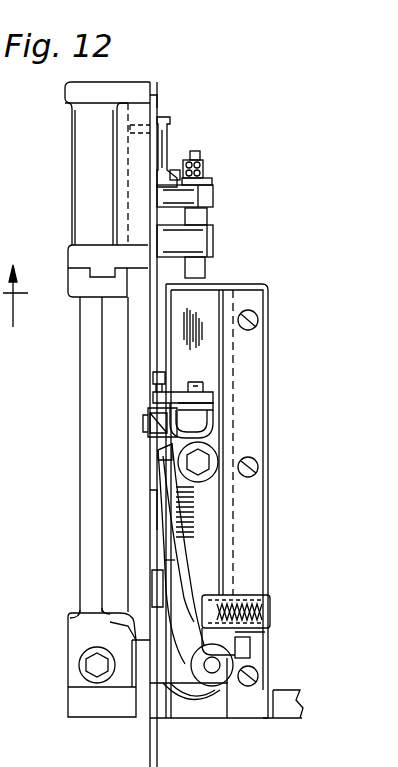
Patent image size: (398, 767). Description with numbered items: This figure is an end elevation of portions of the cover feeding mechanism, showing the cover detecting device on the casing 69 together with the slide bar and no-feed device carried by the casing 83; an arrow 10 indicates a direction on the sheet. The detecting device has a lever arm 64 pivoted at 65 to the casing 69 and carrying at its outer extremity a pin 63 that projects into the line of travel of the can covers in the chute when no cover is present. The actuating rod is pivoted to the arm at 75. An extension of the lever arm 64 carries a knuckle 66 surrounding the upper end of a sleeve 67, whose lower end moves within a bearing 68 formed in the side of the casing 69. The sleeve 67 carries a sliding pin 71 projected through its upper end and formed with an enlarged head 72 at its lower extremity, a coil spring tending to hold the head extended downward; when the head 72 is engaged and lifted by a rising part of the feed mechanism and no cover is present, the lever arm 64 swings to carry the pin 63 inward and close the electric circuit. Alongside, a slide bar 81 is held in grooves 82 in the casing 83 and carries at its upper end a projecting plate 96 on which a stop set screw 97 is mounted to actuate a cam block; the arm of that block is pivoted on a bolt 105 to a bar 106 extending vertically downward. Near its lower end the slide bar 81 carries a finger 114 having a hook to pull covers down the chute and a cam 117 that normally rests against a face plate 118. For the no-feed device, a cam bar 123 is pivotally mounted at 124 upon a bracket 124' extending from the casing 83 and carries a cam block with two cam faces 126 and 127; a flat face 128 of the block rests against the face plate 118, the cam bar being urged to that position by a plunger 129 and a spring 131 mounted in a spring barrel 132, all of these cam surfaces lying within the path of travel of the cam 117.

The direction arrow 10 is at (27, 296).
The pin 63 is at (158, 106).
The lever arm 64 is at (166, 150).
The pivot 65 is at (213, 181).
The knuckle 66 is at (214, 195).
The sleeve 67 is at (208, 217).
The bearing 68 is at (214, 242).
The casing 69 is at (100, 143).
The sliding pin 71 is at (201, 155).
The enlarged head 72 is at (206, 268).
The pivot 75 is at (180, 172).
The slide bar 81 is at (200, 530).
The grooves 82 is at (238, 365).
The casing 83 is at (117, 352).
The projecting plate 96 is at (214, 397).
The stop set screw 97 is at (150, 385).
The bolt 105 is at (150, 437).
The bar 106 is at (146, 462).
The finger 114 is at (172, 690).
The cam 117 is at (153, 585).
The face plate 118 is at (148, 327).
The cam bar 123 is at (170, 555).
The pivot 124 is at (103, 665).
The bracket 124' is at (68, 619).
The cam face 126 is at (153, 540).
The cam face 127 is at (148, 458).
The flat face 128 is at (150, 498).
The plunger 129 is at (197, 596).
The spring 131 is at (272, 604).
The spring barrel 132 is at (266, 630).